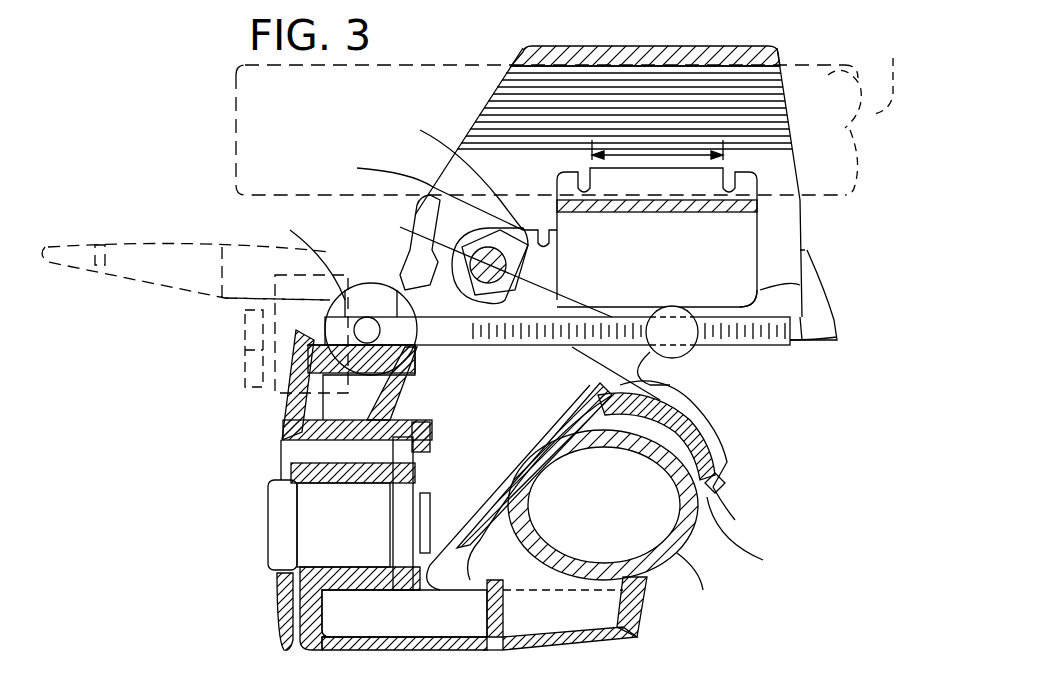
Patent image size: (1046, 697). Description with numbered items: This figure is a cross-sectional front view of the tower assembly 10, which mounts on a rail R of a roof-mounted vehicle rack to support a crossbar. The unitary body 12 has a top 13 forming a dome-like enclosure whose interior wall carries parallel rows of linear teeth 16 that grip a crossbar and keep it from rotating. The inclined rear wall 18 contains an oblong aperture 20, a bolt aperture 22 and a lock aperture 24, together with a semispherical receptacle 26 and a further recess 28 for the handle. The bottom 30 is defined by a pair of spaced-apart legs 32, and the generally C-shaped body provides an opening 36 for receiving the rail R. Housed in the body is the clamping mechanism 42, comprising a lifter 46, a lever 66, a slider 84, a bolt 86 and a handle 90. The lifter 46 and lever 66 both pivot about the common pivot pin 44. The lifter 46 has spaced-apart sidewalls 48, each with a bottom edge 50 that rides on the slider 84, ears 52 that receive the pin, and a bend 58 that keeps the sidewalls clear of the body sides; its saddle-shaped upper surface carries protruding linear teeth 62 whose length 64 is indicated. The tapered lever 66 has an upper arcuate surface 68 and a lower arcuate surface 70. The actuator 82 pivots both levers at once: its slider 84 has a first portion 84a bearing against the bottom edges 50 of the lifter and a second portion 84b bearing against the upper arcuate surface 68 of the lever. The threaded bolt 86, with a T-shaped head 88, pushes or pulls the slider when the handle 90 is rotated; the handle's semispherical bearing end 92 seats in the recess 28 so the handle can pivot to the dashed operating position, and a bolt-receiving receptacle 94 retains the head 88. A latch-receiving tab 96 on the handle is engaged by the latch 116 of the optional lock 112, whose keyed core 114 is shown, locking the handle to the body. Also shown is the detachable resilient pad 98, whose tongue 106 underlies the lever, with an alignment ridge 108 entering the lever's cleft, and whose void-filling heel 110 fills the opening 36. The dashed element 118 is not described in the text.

The tower assembly 10 is at (205, 170).
The unitary body 12 is at (465, 160).
The top 13 is at (588, 50).
The linear teeth 16 is at (652, 90).
The inclined rear wall 18 is at (412, 215).
The oblong aperture 20 is at (437, 200).
The bolt aperture 22 is at (365, 292).
The lock aperture 24 is at (310, 570).
The semispherical receptacle 26 is at (300, 422).
The recess 28 is at (300, 370).
The bottom 30 is at (438, 656).
The legs 32 is at (350, 645).
The opening 36 is at (705, 555).
The clamping mechanism 42 is at (832, 376).
The pivot pin 44 is at (412, 230).
The lifter 46 is at (735, 258).
The sidewalls 48 is at (660, 266).
The bottom edge 50 is at (640, 305).
The ears 52 is at (461, 166).
The bend 58 is at (539, 673).
The linear teeth 62 is at (757, 215).
The length 64 is at (674, 152).
The lever 66 is at (675, 395).
The upper arcuate surface 68 is at (703, 413).
The lower arcuate surface 70 is at (590, 355).
The actuator 82 is at (232, 332).
The slider 84 is at (677, 335).
The first portion 84a is at (860, 292).
The second portion 84b is at (750, 387).
The bolt 86 is at (790, 335).
The head 88 is at (325, 310).
The handle 90 is at (97, 245).
The semispherical bearing end 92 is at (330, 250).
The bolt-receiving receptacle 94 is at (362, 330).
The latch-receiving tab 96 is at (415, 407).
The pad 98 is at (727, 490).
The tongue 106 is at (763, 533).
The alignment ridge 108 is at (710, 430).
The void-filling heel 110 is at (640, 630).
The lock 112 is at (255, 512).
The keyed core 114 is at (337, 535).
The latch 116 is at (400, 490).
The cord 118 is at (872, 111).
The rails R is at (695, 587).